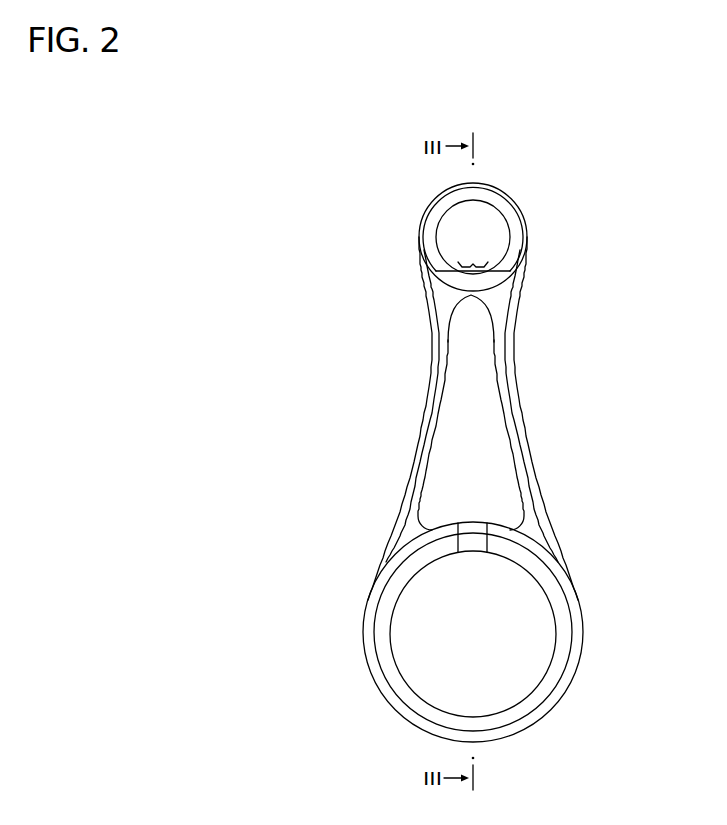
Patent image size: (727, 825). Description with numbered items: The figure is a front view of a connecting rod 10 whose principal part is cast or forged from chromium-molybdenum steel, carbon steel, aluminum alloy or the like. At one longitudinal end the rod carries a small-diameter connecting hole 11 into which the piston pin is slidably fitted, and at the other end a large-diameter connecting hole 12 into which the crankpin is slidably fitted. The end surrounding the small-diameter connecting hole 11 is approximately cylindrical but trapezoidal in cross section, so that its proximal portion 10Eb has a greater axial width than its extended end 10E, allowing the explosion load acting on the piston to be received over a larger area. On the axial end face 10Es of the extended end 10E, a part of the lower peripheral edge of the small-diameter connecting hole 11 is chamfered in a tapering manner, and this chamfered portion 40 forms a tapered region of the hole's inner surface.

The connecting rod 10 is at (570, 263).
The extended end 10E is at (473, 183).
The axial end face 10Es is at (420, 238).
The proximal portion 10Eb is at (500, 278).
The small-diameter connecting hole 11 is at (488, 208).
The large-diameter connecting hole 12 is at (556, 631).
The chamfered portion 40 is at (473, 252).